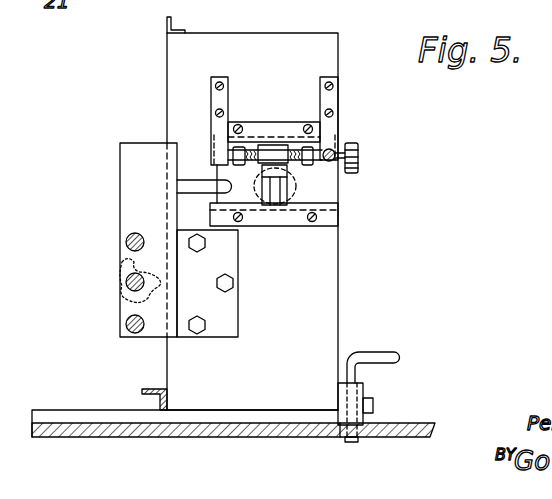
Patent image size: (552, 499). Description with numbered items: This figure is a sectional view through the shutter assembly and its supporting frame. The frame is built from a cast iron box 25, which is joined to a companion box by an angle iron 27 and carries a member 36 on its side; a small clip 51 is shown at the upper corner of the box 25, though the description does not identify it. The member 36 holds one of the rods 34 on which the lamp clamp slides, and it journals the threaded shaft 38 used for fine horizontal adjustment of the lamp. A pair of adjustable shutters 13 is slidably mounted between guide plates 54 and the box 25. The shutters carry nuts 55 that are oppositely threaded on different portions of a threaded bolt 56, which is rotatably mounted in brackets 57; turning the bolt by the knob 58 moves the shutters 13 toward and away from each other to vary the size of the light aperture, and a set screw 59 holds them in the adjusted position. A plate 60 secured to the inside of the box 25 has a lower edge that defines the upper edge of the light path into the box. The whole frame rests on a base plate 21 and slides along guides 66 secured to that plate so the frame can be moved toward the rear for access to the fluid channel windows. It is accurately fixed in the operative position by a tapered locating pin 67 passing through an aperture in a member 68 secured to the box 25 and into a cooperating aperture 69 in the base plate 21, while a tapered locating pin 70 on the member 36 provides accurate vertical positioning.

The adjustable shutters 13 is at (218, 172).
The base plate 21 is at (77, 435).
The box 25 is at (325, 302).
The angle iron 27 is at (148, 390).
The rods 34 is at (126, 242).
The members 36 is at (125, 208).
The threaded shaft 38 is at (126, 283).
The clip 51 is at (172, 23).
The guide plates 54 is at (270, 125).
The nuts 55 is at (243, 145).
The threaded bolt 56 is at (292, 165).
The brackets 57 is at (213, 98).
The knob 58 is at (358, 155).
The set screw 59 is at (335, 148).
The plate 60 is at (277, 178).
The guides 66 is at (62, 412).
The tapered locating pins 67 is at (350, 441).
The members 68 is at (365, 390).
The apertures 69 is at (343, 437).
The tapered locating pins 70 is at (203, 187).